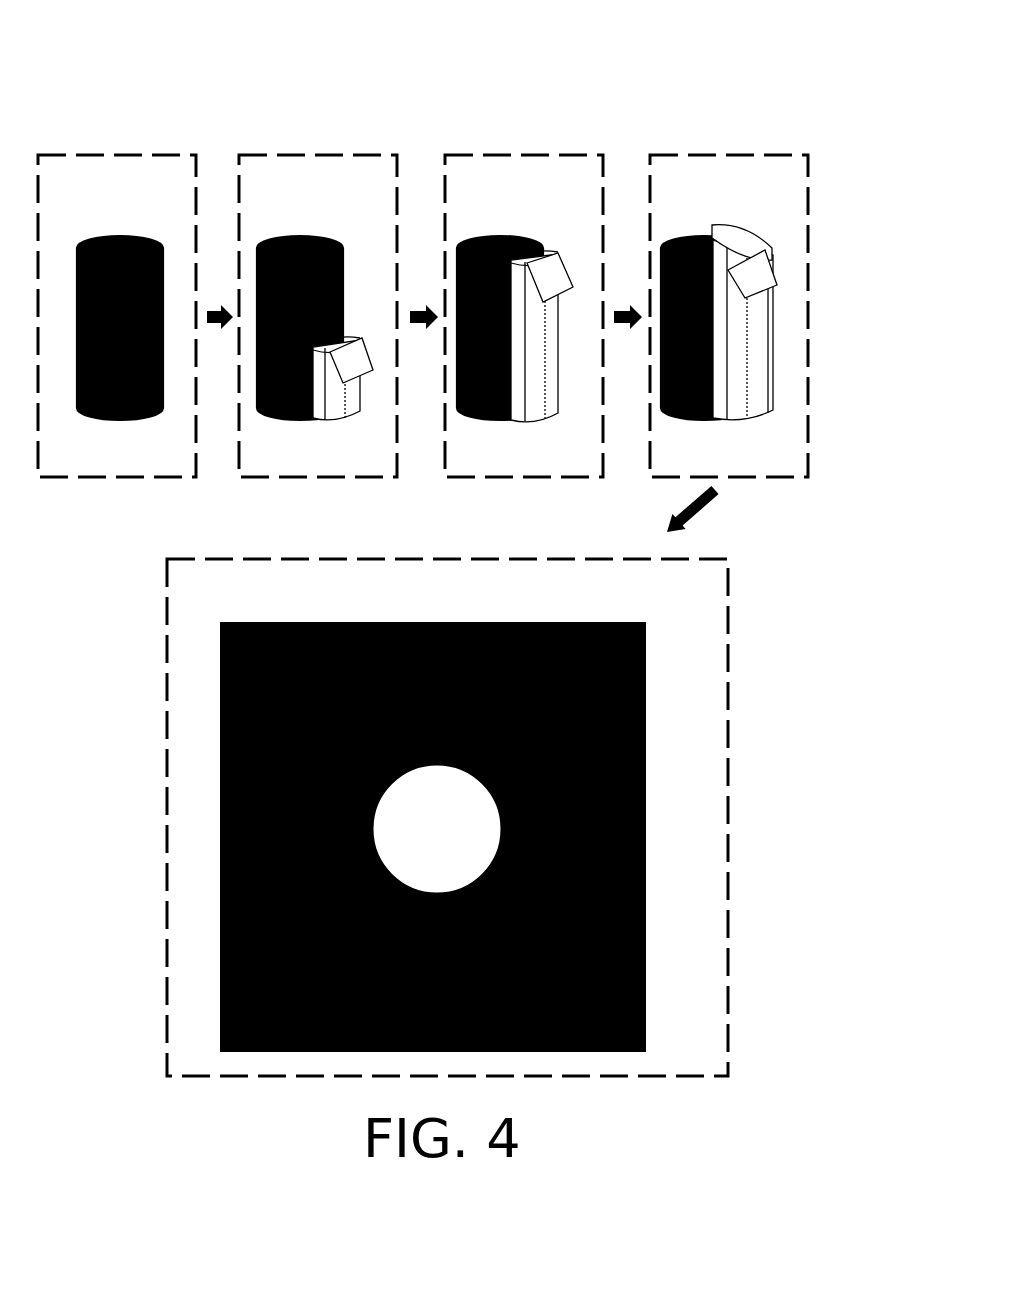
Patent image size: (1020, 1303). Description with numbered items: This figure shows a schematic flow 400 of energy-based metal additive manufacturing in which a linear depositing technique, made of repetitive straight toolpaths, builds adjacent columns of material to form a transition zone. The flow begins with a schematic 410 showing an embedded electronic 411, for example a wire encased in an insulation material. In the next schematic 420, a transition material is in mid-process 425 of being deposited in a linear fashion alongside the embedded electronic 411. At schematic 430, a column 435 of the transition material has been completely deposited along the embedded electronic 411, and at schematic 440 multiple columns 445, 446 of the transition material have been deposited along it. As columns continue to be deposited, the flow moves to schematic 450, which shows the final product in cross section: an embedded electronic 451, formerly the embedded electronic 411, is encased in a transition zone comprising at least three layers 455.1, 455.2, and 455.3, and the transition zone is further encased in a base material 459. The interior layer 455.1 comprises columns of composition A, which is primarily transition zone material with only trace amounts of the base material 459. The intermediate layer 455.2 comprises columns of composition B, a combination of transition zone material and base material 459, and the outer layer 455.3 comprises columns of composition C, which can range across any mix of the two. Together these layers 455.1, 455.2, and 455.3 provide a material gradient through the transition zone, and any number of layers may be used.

The schematic flow 400 is at (615, 114).
The schematic 410 is at (117, 316).
The embedded electronic 411 is at (122, 236).
The schematic 420 is at (318, 316).
The transition material in mid-process of being deposited 425 is at (351, 339).
The schematic 430 is at (524, 316).
The column of transition material 435 is at (555, 250).
The schematic 440 is at (729, 316).
The column of transition material 445 is at (763, 242).
The column of transition material 446 is at (717, 224).
The schematic 450 is at (447, 817).
The embedded electronic 451 is at (437, 829).
The interior layer 455.1 is at (542, 811).
The intermediate layer 455.2 is at (549, 742).
The outer layer 455.3 is at (622, 621).
The base material 459 is at (257, 621).